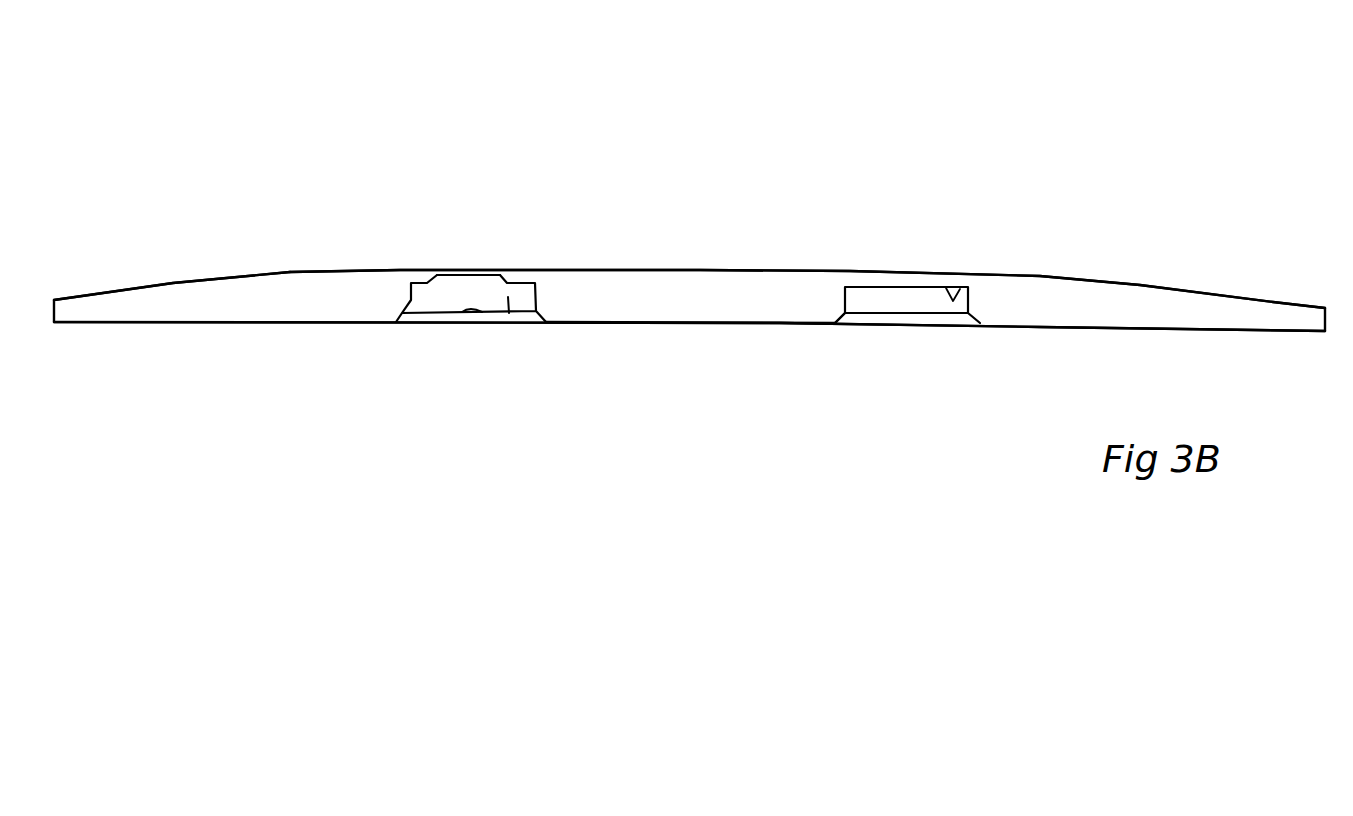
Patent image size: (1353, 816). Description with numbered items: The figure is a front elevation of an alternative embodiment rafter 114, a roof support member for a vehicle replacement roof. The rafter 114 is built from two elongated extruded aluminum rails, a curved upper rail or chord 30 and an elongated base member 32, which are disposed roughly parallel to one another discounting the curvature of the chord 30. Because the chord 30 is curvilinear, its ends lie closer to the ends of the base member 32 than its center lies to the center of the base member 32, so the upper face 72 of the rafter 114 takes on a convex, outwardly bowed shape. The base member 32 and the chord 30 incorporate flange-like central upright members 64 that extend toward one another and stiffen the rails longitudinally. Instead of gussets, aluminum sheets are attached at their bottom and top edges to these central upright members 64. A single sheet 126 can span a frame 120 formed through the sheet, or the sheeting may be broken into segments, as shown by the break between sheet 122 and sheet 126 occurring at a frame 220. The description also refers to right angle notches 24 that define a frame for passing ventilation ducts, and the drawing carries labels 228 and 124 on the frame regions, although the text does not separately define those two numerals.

The rafter 114 is at (1068, 108).
The sheet 122 is at (289, 291).
The right angle notches 24 is at (428, 283).
The central upright members 64 is at (480, 273).
The upper face 72 is at (562, 270).
The frame 220 is at (509, 313).
The sheet 126 is at (690, 313).
The flange 228 is at (828, 314).
The frame 120 is at (920, 309).
The notch 124 is at (949, 290).
The chord 30 is at (1145, 287).
The elongated base member 32 is at (1140, 330).